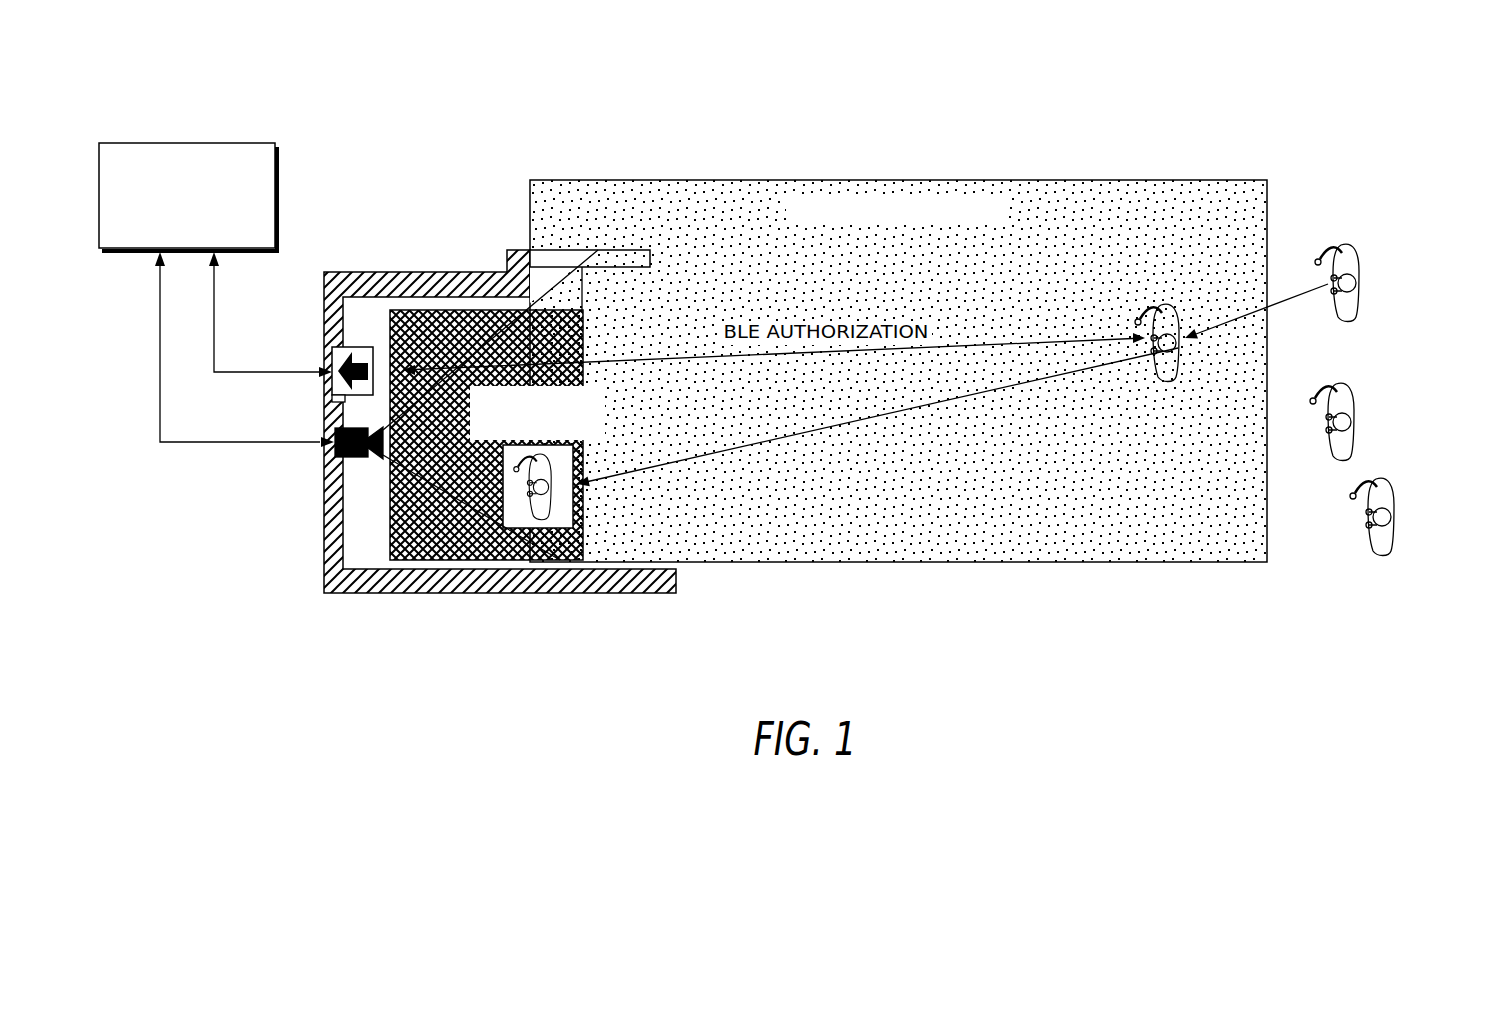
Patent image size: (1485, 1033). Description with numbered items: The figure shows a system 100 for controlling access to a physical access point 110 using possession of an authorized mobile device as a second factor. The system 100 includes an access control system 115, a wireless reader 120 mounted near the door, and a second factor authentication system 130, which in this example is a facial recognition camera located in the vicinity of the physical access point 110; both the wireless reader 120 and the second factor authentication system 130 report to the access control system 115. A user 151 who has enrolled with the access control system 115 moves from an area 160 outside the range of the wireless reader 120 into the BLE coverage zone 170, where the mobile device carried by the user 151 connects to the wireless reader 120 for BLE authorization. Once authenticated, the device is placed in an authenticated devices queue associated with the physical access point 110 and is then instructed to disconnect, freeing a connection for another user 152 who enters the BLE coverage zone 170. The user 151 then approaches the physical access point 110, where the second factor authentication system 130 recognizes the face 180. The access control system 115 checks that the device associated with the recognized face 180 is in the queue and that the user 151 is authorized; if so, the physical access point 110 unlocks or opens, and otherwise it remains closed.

The system 100 is at (215, 38).
The physical access point 110 is at (324, 581).
The access control system 115 is at (187, 143).
The wireless reader 120 is at (332, 384).
The second factor authentication system 130 is at (333, 452).
The user 151 is at (1362, 286).
The another user 152 is at (1356, 425).
The area 160 is at (1302, 354).
The BLE coverage zone 170 is at (898, 180).
The face 180 is at (556, 528).